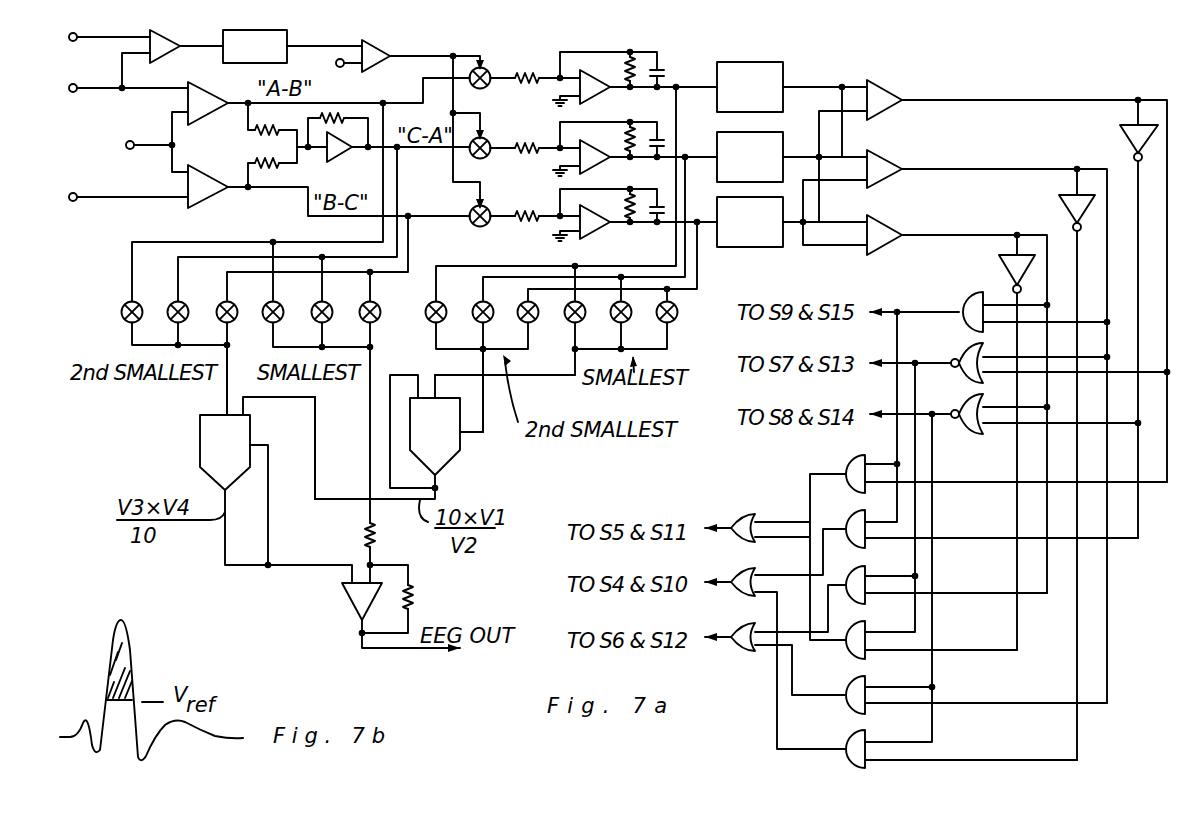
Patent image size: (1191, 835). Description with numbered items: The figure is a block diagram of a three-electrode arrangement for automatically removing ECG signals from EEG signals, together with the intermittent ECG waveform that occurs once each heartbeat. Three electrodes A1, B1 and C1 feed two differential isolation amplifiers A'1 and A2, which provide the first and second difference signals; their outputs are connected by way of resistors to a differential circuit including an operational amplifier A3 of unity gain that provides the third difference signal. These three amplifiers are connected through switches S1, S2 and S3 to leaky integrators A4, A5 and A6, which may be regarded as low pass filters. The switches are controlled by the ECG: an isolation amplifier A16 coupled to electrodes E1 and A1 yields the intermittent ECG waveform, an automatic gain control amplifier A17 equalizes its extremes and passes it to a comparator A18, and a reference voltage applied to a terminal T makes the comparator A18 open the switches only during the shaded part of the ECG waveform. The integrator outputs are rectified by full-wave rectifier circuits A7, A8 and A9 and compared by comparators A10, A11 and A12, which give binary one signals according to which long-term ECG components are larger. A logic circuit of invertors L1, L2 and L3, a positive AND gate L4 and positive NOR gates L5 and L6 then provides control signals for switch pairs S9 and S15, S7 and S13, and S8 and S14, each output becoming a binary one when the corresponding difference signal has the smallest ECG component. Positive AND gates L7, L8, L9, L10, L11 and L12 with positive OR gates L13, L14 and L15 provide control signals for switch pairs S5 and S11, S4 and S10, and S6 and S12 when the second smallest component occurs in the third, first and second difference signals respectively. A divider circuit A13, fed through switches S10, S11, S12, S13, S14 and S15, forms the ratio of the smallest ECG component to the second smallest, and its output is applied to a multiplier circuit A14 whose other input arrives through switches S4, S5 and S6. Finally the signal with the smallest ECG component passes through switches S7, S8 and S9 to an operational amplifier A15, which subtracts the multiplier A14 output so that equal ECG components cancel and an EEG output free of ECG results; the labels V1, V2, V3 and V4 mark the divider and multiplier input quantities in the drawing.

The electrode E1 is at (74, 41).
The electrode A1 is at (74, 92).
The electrode B1 is at (126, 145).
The electrode C1 is at (75, 193).
The terminal T is at (336, 63).
The isolation amplifier A16 is at (162, 56).
The automatic gain control amplifier A17 is at (255, 46).
The comparator A18 is at (380, 74).
The differential isolation amplifier A'1 is at (205, 120).
The differential isolation amplifier A2 is at (205, 200).
The operational amplifier A3 is at (337, 160).
The switch S1 is at (486, 88).
The switch S2 is at (486, 158).
The switch S3 is at (487, 226).
The leaky integrator A4 is at (595, 65).
The leaky integrator A5 is at (607, 134).
The leaky integrator A6 is at (607, 202).
The full-wave rectifier circuit A7 is at (750, 87).
The full-wave rectifier circuit A8 is at (750, 157).
The full-wave rectifier circuit A9 is at (750, 222).
The comparator A10 is at (882, 90).
The comparator A11 is at (882, 158).
The comparator A12 is at (882, 224).
The invertor L1 is at (1120, 134).
The invertor L2 is at (1060, 206).
The invertor L3 is at (1002, 268).
The positive AND gate L4 is at (963, 300).
The positive NOR gate L5 is at (957, 352).
The positive NOR gate L6 is at (962, 404).
The positive AND gate L7 is at (850, 458).
The positive AND gate L8 is at (852, 515).
The positive AND gate L9 is at (858, 570).
The positive AND gate L10 is at (852, 655).
The positive AND gate L11 is at (852, 710).
The positive AND gate L12 is at (858, 735).
The positive OR gate L13 is at (748, 512).
The positive OR gate L14 is at (748, 568).
The positive OR gate L15 is at (748, 652).
The switch S4 is at (122, 305).
The switch S5 is at (168, 305).
The switch S6 is at (217, 305).
The switch S7 is at (264, 306).
The switch S8 is at (313, 306).
The switch S9 is at (361, 306).
The switch S10 is at (427, 306).
The switch S11 is at (474, 306).
The switch S12 is at (519, 306).
The switch S13 is at (586, 312).
The switch S14 is at (632, 312).
The switch S15 is at (678, 312).
The smallest signal voltage V1 is at (442, 372).
The second smallest signal voltage V2 is at (483, 432).
The second smallest signal voltage V3 is at (227, 392).
The divider output voltage V4 is at (315, 424).
The divider circuit A13 is at (435, 436).
The multiplier circuit A14 is at (225, 452).
The operational amplifier A15 is at (345, 597).